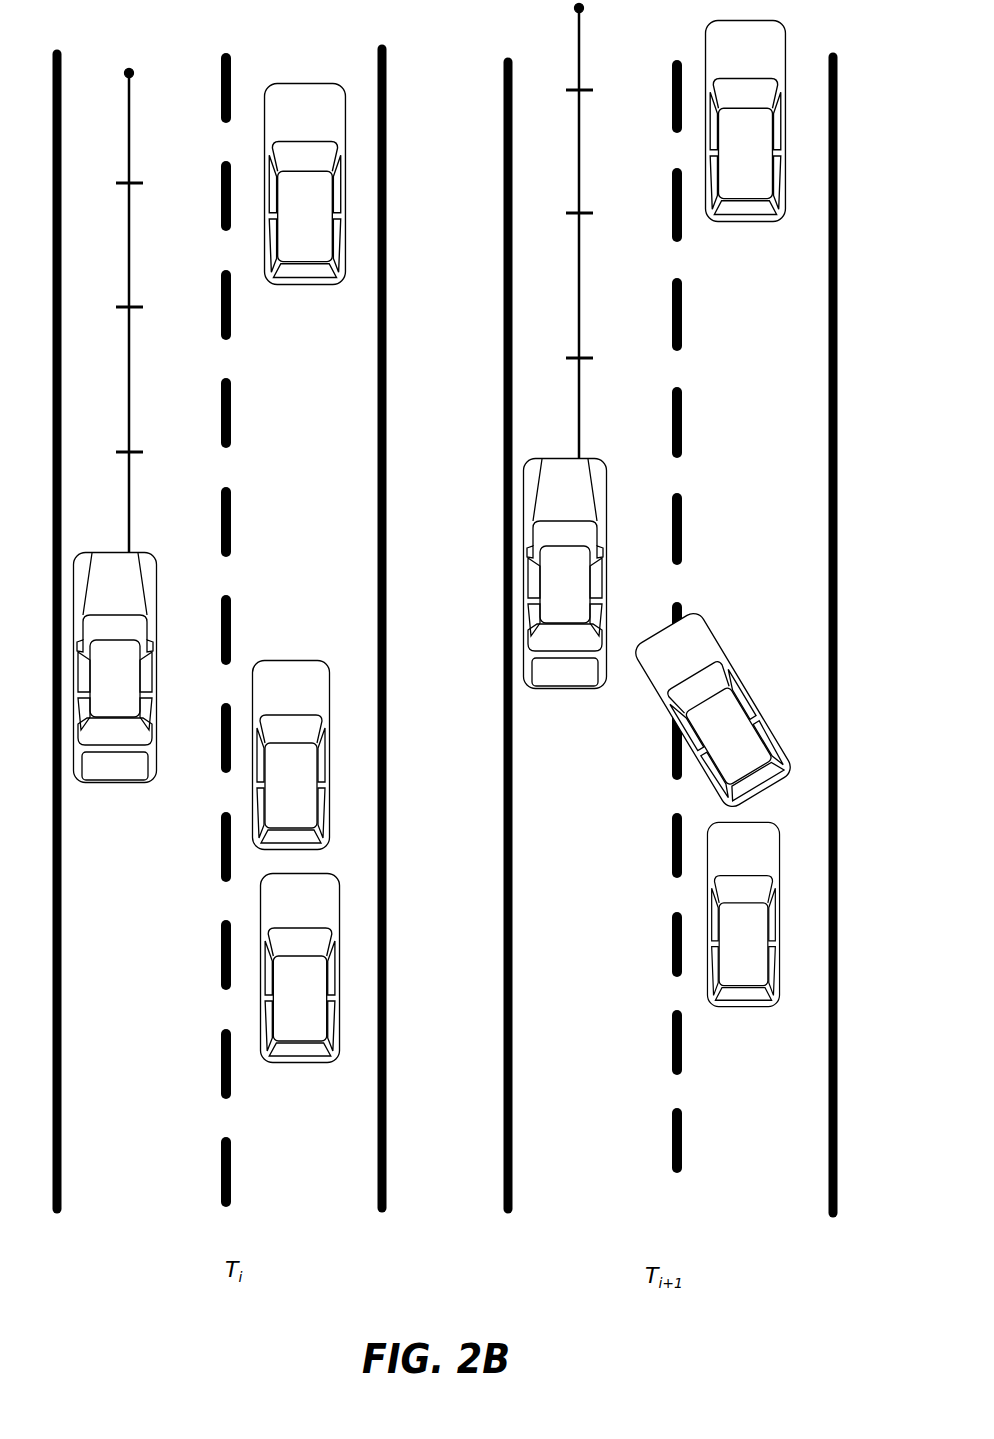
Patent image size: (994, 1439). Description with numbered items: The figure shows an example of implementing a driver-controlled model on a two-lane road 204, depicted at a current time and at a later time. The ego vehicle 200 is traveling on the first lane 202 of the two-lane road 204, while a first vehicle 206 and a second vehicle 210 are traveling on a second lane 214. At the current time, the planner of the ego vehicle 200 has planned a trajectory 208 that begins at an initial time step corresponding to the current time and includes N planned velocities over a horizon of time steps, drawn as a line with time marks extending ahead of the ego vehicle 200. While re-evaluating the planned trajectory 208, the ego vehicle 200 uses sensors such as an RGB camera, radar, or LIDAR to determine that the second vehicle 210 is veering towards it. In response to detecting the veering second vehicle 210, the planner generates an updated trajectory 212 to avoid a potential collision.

The ego vehicle 200 is at (130, 683).
The first lane 202 is at (158, 1206).
The two-lane road 204 is at (388, 590).
The first vehicle 206 is at (317, 1036).
The planned trajectory 208 is at (128, 493).
The second vehicle 210 is at (307, 811).
The updated trajectory 212 is at (578, 399).
The second lane 214 is at (325, 1206).